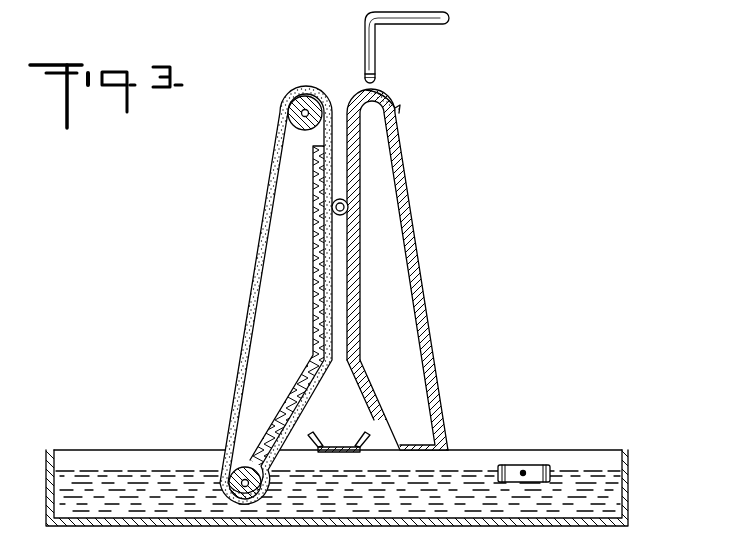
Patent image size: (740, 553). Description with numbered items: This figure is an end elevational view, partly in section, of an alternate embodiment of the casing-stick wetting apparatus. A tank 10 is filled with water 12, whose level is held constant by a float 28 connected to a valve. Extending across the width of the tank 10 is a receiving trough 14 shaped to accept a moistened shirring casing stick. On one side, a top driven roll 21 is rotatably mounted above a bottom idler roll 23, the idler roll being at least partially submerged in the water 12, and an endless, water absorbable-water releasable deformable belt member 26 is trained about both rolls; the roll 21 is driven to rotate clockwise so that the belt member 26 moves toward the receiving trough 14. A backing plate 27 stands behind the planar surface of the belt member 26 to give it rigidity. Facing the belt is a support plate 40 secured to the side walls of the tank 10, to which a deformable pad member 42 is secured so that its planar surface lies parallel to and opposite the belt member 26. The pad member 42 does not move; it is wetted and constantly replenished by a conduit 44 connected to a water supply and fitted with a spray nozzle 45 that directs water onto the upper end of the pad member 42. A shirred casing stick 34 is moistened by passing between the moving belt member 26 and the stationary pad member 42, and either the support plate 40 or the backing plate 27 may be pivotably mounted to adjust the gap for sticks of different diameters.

The tank 10 is at (636, 469).
The water 12 is at (124, 474).
The receiving trough 14 is at (326, 446).
The top driven roll 21 is at (299, 107).
The bottom idler roll 23 is at (247, 468).
The deformable belt member 26 is at (258, 257).
The backing plate 27 is at (313, 303).
The float 28 is at (512, 465).
The shirred casing stick 34 is at (344, 213).
The support plate 40 is at (415, 252).
The deformable pad member 42 is at (393, 93).
The conduit 44 is at (418, 22).
The spray nozzle 45 is at (367, 78).